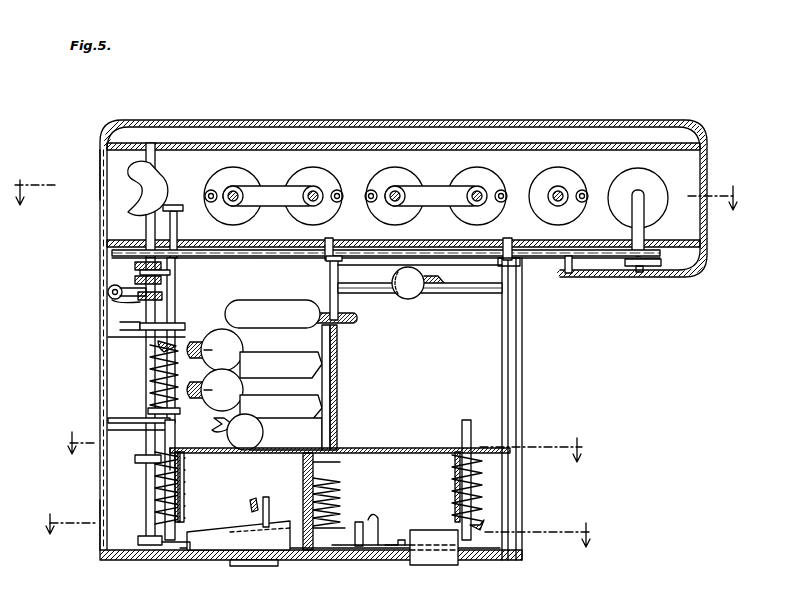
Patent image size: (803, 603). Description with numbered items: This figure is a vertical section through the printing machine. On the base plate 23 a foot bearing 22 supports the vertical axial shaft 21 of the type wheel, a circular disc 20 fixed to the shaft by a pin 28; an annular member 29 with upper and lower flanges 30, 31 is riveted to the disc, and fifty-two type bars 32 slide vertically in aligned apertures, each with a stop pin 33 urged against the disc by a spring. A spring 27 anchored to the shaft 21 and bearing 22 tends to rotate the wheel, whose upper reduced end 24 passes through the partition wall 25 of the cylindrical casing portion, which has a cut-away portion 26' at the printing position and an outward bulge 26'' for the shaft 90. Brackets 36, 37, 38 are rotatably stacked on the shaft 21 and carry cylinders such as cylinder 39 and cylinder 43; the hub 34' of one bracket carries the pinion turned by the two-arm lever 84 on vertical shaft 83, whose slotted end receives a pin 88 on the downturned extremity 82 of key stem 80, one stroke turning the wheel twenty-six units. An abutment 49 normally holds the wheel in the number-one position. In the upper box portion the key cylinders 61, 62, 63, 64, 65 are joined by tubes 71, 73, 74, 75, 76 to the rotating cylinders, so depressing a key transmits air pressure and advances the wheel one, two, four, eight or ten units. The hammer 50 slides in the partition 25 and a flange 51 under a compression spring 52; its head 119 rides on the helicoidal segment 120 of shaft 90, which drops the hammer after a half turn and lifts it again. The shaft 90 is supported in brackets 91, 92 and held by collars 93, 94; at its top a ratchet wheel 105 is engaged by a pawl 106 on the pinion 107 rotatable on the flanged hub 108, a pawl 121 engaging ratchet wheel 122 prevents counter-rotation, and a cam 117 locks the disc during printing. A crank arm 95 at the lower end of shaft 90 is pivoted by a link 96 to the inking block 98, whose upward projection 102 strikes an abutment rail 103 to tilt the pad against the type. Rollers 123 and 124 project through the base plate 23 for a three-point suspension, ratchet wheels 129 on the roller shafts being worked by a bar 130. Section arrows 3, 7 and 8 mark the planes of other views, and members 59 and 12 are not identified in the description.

The housing top wall 59 is at (488, 130).
The longitudinal outward bulge 26'' is at (81, 175).
The cut away portion 26' is at (102, 543).
The section line 3- 3 is at (376, 203).
The section line 7- 7 is at (322, 455).
The section line 8- 8 is at (316, 539).
The foot bearing 22 is at (335, 560).
The vertical shaft 83 is at (524, 382).
The closed cylinder 61 is at (233, 196).
The cylinder 62 is at (282, 196).
The cylinder 63 is at (395, 196).
The cylinder 64 is at (445, 196).
The cylinder 65 is at (558, 196).
The stem 80 is at (632, 242).
The flexible tube 71 is at (209, 190).
The tube 73 is at (337, 190).
The tube 74 is at (371, 190).
The tube 75 is at (504, 191).
The tube 76 is at (585, 191).
The helicoidal segment 120 is at (170, 186).
The shaft 90 is at (150, 170).
The head 119 is at (178, 208).
The partition wall 25 is at (424, 248).
The upper reduced end 24 is at (332, 246).
The frame plate 12 is at (190, 256).
The two arm lever 84 is at (569, 276).
The extremity 82 is at (630, 268).
The pin 88 is at (641, 274).
The hub 34' is at (311, 288).
The abutment 49 is at (476, 295).
The cylinder 39 is at (372, 300).
The cylinder 43 is at (268, 298).
The bracket 36 is at (261, 381).
The bracket 37 is at (281, 407).
The bracket 38 is at (274, 432).
The cam 117 is at (135, 462).
The hammer 50 is at (176, 304).
The pinion 107 is at (136, 266).
The hub 108 is at (172, 264).
The ratchet wheel 105 is at (136, 281).
The pawl 106 is at (175, 282).
The pawl 121 is at (108, 289).
The ratchet wheel 122 is at (112, 304).
The bracket 91 is at (128, 322).
The fixed collar 93 is at (172, 326).
The flange 51 is at (135, 341).
The compression spring 52 is at (176, 346).
The fixed collar 94 is at (133, 419).
The bracket 92 is at (132, 432).
The crank arm 95 is at (138, 540).
The type bar 32 is at (174, 436).
The stop pin 33 is at (186, 470).
The annular member 29 is at (190, 487).
The lower flange 31 is at (480, 524).
The circular disc 20 is at (386, 452).
The upper flange 30 is at (190, 456).
The pin 28 is at (302, 462).
The vertical axial shaft 21 is at (328, 478).
The spring 27 is at (333, 508).
The block 98 is at (228, 545).
The link 96 is at (180, 552).
The roller 124 is at (254, 566).
The abutment rail 103 is at (252, 500).
The upward projection 102 is at (272, 494).
The ratchet wheel 129 is at (371, 534).
The bar 130 is at (368, 516).
The base plate 23 is at (392, 552).
The roller 123 is at (437, 560).